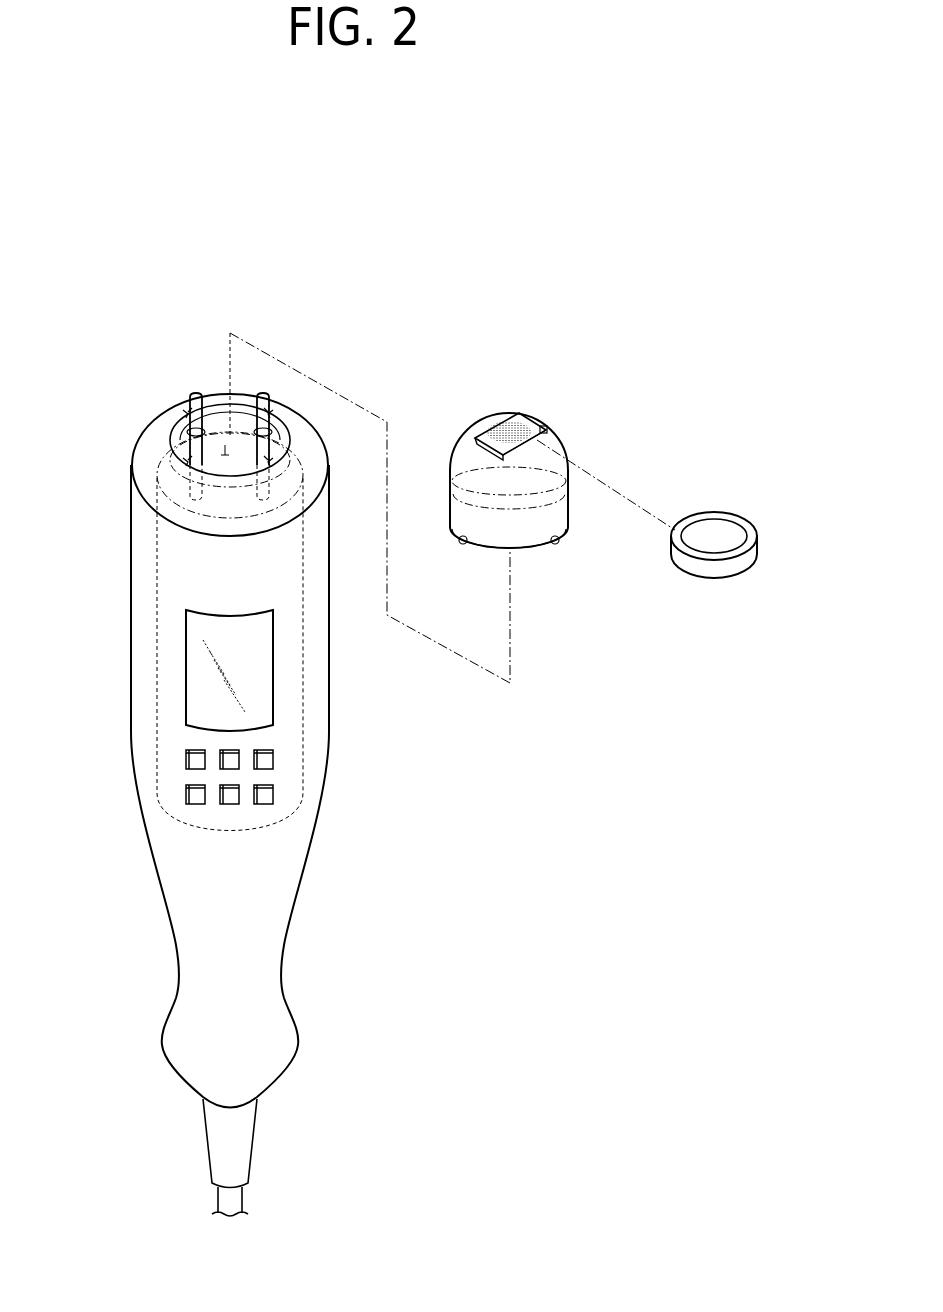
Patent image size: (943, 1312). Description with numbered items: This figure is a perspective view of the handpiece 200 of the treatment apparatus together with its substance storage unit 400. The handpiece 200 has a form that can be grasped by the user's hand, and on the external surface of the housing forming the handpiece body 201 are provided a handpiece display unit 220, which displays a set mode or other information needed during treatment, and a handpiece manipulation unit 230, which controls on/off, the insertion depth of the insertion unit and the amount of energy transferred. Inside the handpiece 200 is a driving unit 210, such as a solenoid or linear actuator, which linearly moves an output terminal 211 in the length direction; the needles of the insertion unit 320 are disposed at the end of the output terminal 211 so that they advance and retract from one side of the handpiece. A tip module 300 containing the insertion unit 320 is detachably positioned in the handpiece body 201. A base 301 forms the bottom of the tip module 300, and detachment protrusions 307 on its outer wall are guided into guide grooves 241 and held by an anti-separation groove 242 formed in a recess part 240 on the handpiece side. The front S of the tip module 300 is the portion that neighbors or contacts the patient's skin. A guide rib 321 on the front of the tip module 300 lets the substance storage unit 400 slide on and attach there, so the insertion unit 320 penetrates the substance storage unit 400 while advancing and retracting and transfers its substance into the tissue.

The handpiece 200 is at (463, 314).
The handpiece body 201 is at (316, 364).
The driving unit 210 is at (157, 551).
The output terminal 211 is at (197, 392).
The handpiece display unit 220 is at (197, 623).
The handpiece manipulation unit 230 is at (193, 757).
The recess part 240 is at (222, 452).
The guide grooves 241 is at (184, 409).
The anti-separation groove 242 is at (172, 433).
The tip module 300 is at (471, 364).
The base 301 is at (535, 548).
The detachment protrusions 307 is at (560, 541).
The insertion unit 320 is at (515, 420).
The guide rib 321 is at (548, 428).
The front S is at (546, 436).
The substance storage unit 400 is at (739, 496).